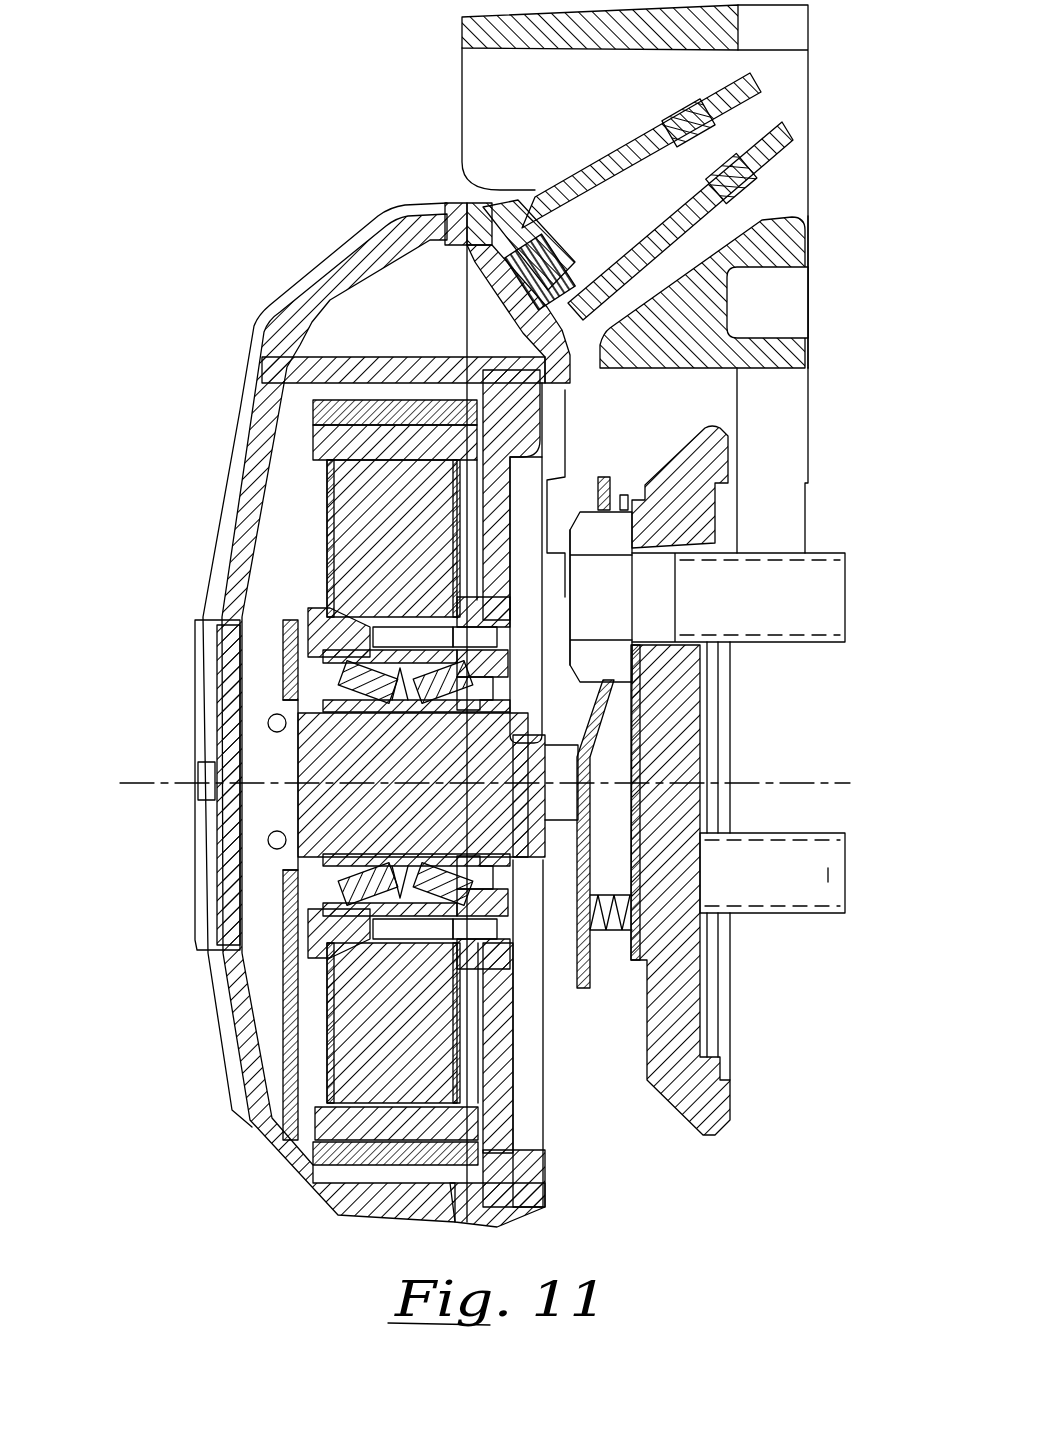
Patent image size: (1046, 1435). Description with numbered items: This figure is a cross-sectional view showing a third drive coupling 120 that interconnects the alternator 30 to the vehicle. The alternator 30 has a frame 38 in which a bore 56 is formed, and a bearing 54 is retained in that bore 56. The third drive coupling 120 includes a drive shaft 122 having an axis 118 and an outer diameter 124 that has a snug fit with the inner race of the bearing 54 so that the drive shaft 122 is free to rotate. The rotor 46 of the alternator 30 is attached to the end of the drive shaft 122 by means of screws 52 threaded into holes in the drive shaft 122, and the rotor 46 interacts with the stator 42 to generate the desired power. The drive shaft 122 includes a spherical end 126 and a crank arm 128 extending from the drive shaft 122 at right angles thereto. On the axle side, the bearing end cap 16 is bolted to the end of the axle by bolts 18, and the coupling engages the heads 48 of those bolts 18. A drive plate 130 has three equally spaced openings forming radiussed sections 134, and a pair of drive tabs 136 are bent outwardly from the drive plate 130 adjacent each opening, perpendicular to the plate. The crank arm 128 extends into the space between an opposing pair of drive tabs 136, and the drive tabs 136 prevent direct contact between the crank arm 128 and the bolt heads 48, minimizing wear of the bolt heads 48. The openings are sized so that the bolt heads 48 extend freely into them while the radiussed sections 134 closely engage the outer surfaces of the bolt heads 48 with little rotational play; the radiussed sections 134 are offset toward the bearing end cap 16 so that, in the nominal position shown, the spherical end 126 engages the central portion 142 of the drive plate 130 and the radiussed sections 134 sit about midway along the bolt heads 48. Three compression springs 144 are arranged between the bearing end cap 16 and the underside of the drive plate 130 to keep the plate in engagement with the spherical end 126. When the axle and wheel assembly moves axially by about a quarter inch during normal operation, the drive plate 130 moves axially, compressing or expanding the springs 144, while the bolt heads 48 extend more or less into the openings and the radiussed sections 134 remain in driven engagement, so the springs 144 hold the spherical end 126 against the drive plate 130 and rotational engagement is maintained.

The bearing end cap 16 is at (715, 1100).
The bolts 18 is at (770, 625).
The alternator 30 is at (262, 262).
The frame 38 is at (372, 222).
The stator 42 is at (345, 1082).
The rotor 46 is at (370, 1157).
The bolt heads 48 is at (592, 540).
The screws 52 is at (275, 715).
The bearing 54 is at (322, 898).
The bore 56 is at (385, 950).
The axis 118 is at (140, 783).
The third drive coupling 120 is at (624, 1005).
The drive shaft 122 is at (320, 805).
The outer diameter 124 is at (318, 710).
The spherical end 126 is at (560, 745).
The crank arm 128 is at (547, 917).
The drive plate 130 is at (582, 988).
The radiussed sections 134 is at (612, 490).
The drive tabs 136 is at (558, 954).
The central portion 142 is at (575, 778).
The compression springs 144 is at (628, 927).